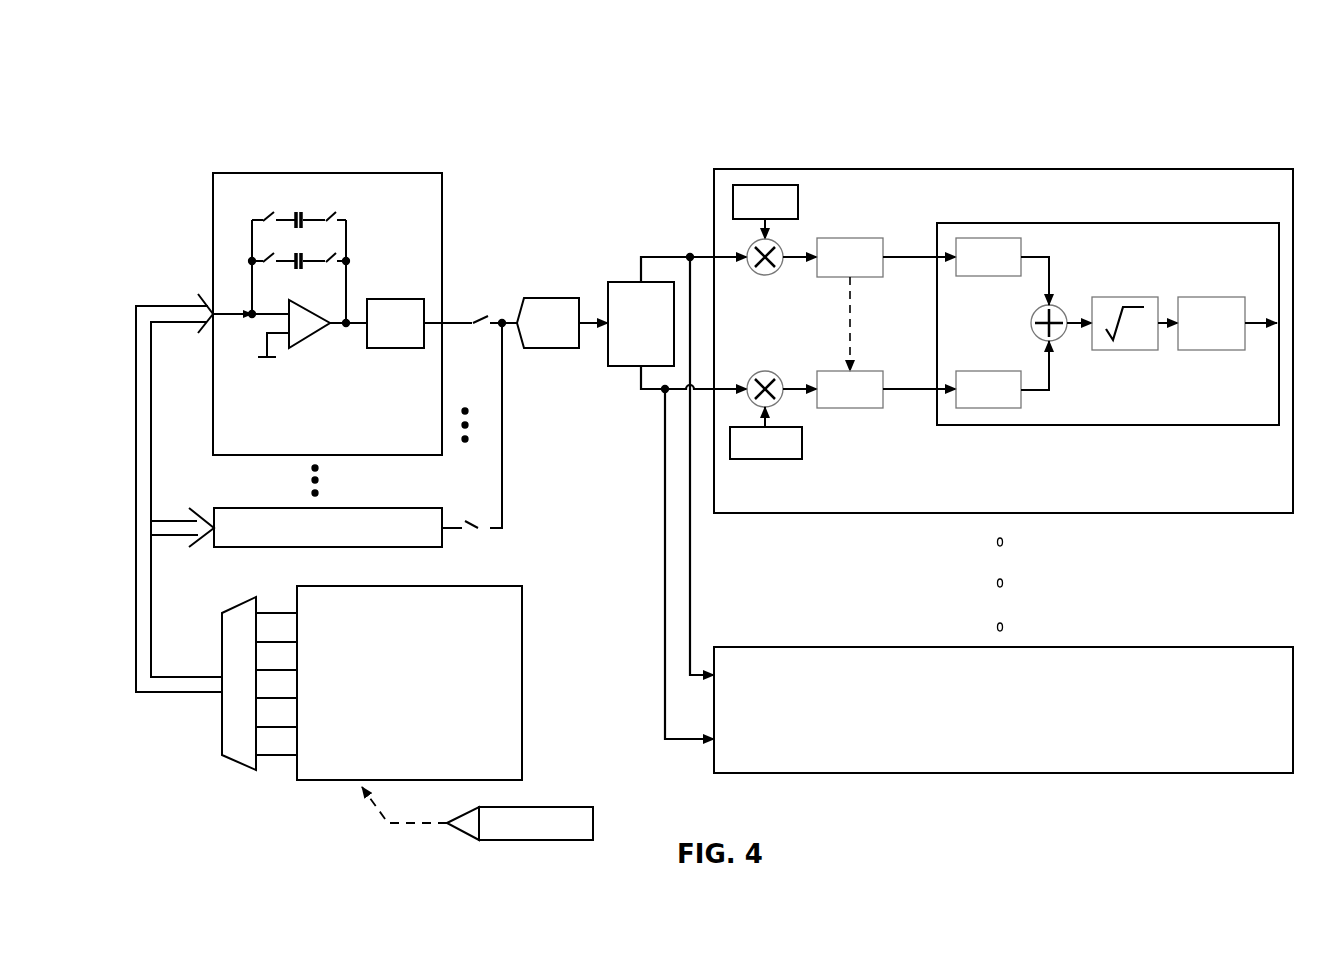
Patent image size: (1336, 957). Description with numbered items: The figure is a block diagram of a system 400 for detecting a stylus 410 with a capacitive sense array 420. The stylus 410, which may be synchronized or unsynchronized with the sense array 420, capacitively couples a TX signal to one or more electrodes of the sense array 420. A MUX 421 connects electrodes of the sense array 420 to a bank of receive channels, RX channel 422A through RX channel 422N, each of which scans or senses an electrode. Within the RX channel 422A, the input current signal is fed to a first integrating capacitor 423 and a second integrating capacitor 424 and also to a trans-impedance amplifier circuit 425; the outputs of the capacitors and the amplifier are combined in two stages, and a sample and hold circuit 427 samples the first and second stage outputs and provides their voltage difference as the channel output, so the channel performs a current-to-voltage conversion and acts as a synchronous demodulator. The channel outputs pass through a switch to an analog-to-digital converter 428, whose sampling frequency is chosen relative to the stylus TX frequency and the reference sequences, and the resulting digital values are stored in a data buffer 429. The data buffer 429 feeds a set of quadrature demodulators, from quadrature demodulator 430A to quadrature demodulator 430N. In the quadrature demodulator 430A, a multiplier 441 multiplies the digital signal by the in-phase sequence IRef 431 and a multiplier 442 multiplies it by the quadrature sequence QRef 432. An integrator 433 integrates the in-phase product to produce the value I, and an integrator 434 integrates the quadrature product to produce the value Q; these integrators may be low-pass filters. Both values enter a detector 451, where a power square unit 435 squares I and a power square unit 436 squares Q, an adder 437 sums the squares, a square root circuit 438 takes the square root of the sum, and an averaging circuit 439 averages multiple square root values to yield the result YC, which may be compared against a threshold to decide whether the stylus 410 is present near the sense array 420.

The system 400 is at (343, 125).
The stylus 410 is at (477, 813).
The sense array 420 is at (409, 683).
The MUX 421 is at (259, 683).
The RX channel 422A is at (327, 314).
The RX channel 422N is at (328, 527).
The first integrating capacitor 423 is at (302, 215).
The second integrating capacitor 424 is at (303, 268).
The trans-impedance amplifier (TIA) circuit 425 is at (312, 338).
The sample and hold (S&H) circuit 427 is at (395, 323).
The analog-to-digital converter (ADC) 428 is at (548, 323).
The data buffer 429 is at (641, 324).
The quadrature demodulator 430A is at (1003, 321).
The quadrature demodulator 430N is at (1003, 710).
The in-phase sequence IRef 431 is at (765, 212).
The quadrature sequence QRef 432 is at (766, 433).
The integrator 433 is at (848, 237).
The integrator 434 is at (850, 410).
The power square unit 435 is at (988, 237).
The power square unit 436 is at (985, 370).
The adder 437 is at (1064, 305).
The square root circuit 438 is at (1125, 297).
The averaging circuit 439 is at (1212, 297).
The multiplier 441 is at (778, 270).
The multiplier 442 is at (757, 370).
The detector 451 is at (1108, 277).